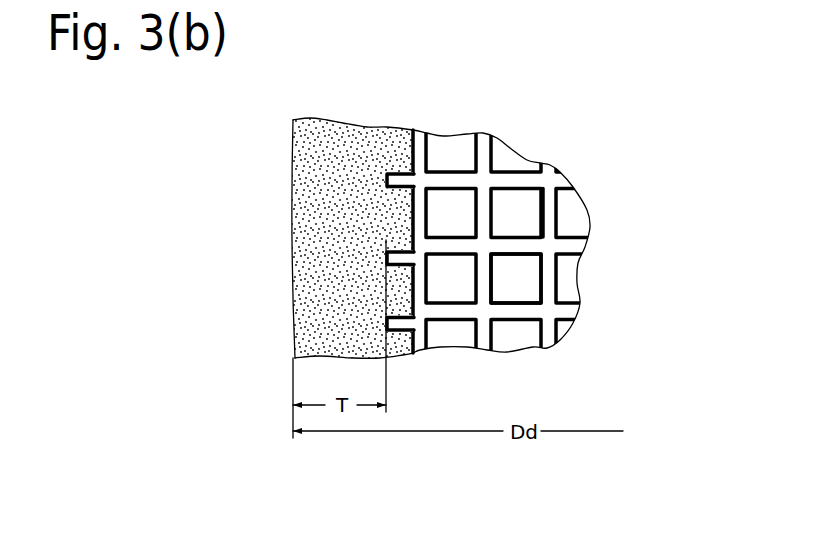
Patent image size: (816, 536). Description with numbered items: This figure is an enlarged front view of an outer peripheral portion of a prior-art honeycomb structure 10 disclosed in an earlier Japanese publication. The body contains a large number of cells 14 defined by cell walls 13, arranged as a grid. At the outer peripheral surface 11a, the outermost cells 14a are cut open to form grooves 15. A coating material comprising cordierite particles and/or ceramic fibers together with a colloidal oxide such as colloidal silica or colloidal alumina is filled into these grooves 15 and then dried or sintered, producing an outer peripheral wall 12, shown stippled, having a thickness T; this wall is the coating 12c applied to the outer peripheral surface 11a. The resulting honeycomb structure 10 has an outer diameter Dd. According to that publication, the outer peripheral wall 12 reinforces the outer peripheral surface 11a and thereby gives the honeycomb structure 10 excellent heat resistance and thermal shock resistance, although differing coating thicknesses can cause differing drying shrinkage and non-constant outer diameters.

The honeycomb structure 10 is at (440, 236).
The outer peripheral surface 11a is at (383, 180).
The outer peripheral wall 12 is at (333, 239).
The coating 12c is at (333, 239).
The cell walls 13 is at (547, 213).
The cells 14 is at (523, 282).
The cells on outer peripheral surface 14a is at (407, 265).
The grooves 15 is at (407, 302).